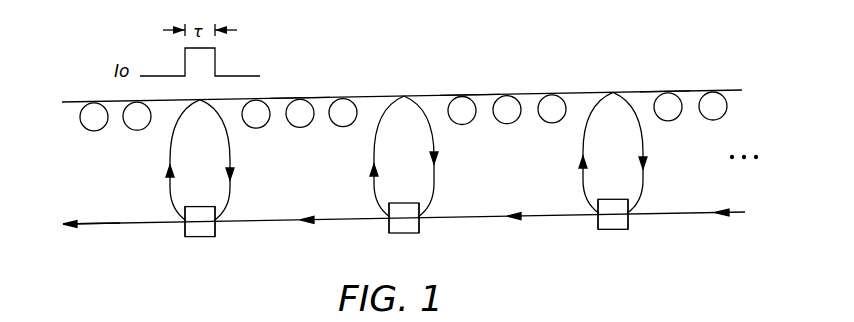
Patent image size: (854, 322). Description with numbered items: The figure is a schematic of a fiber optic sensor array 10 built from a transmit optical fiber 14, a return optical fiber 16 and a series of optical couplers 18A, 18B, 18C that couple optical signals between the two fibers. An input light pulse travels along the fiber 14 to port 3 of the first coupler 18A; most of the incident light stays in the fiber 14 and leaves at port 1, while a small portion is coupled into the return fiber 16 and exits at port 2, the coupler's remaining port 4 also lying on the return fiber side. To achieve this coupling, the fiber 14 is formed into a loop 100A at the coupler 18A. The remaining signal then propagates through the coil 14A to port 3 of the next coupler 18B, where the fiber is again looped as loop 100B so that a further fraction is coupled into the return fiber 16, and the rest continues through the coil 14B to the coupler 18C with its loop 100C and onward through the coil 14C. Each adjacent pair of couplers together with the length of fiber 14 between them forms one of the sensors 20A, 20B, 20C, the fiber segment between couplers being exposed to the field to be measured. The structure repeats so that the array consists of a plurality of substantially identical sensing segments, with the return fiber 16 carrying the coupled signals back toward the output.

The optical fiber 14 is at (72, 100).
The coil 14A is at (300, 88).
The coil 14B is at (470, 83).
The coil 14C is at (658, 83).
The sensor 20A is at (338, 86).
The sensor 20B is at (531, 83).
The sensor 20C is at (699, 83).
The loop 100A is at (237, 157).
The loop 100B is at (440, 159).
The loop 100C is at (648, 155).
The optical coupler 18A is at (192, 240).
The optical coupler 18B is at (416, 241).
The optical coupler 18C is at (606, 233).
The fiber optic sensor array 10 is at (306, 235).
The optical fiber 16 is at (117, 227).
The port 1 is at (174, 216).
The port 2 is at (182, 231).
The port 3 is at (226, 216).
The port 4 is at (218, 232).